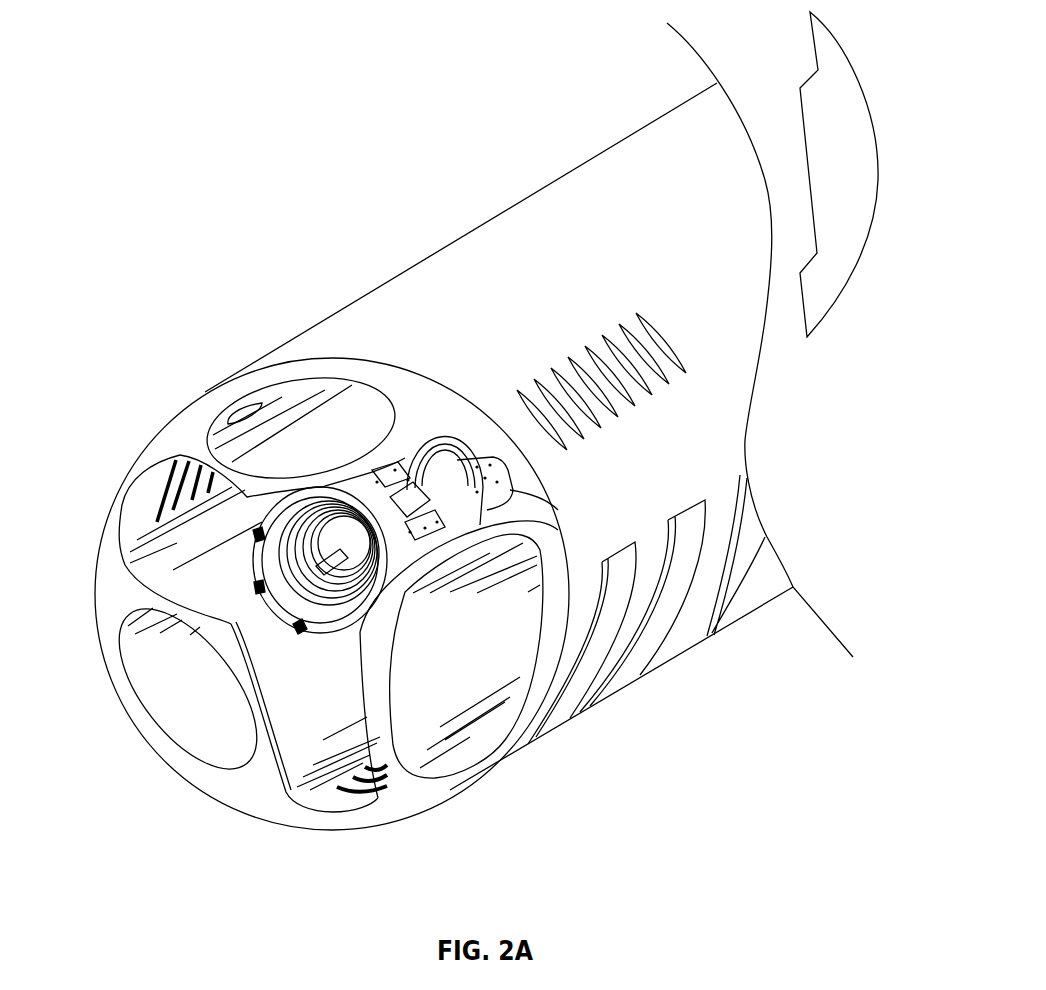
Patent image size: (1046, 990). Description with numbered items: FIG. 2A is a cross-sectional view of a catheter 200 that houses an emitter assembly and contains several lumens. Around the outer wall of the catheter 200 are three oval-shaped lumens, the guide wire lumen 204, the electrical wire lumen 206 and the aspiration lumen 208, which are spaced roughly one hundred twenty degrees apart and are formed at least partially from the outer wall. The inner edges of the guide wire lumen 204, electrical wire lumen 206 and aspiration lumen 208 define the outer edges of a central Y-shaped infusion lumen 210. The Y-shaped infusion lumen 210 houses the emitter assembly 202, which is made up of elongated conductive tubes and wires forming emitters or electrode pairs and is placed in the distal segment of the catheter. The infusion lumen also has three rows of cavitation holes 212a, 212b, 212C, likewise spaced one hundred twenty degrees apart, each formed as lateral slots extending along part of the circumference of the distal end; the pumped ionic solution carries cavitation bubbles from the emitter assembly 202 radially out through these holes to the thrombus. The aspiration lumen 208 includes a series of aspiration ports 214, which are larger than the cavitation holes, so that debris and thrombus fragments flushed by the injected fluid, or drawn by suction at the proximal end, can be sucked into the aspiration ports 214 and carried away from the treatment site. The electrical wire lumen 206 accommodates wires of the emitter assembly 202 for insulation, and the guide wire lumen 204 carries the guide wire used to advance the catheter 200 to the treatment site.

The catheter 200 is at (138, 90).
The emitter assembly 202 is at (513, 480).
The guide wire lumen 204 is at (177, 710).
The electrical wire lumen 206 is at (253, 402).
The aspiration lumen 208 is at (420, 738).
The Y-shaped infusion lumen 210 is at (290, 747).
The cavitation holes 212a is at (690, 373).
The cavitation holes 212b is at (362, 790).
The cavitation holes 212C is at (167, 484).
The aspiration ports 214 is at (717, 603).